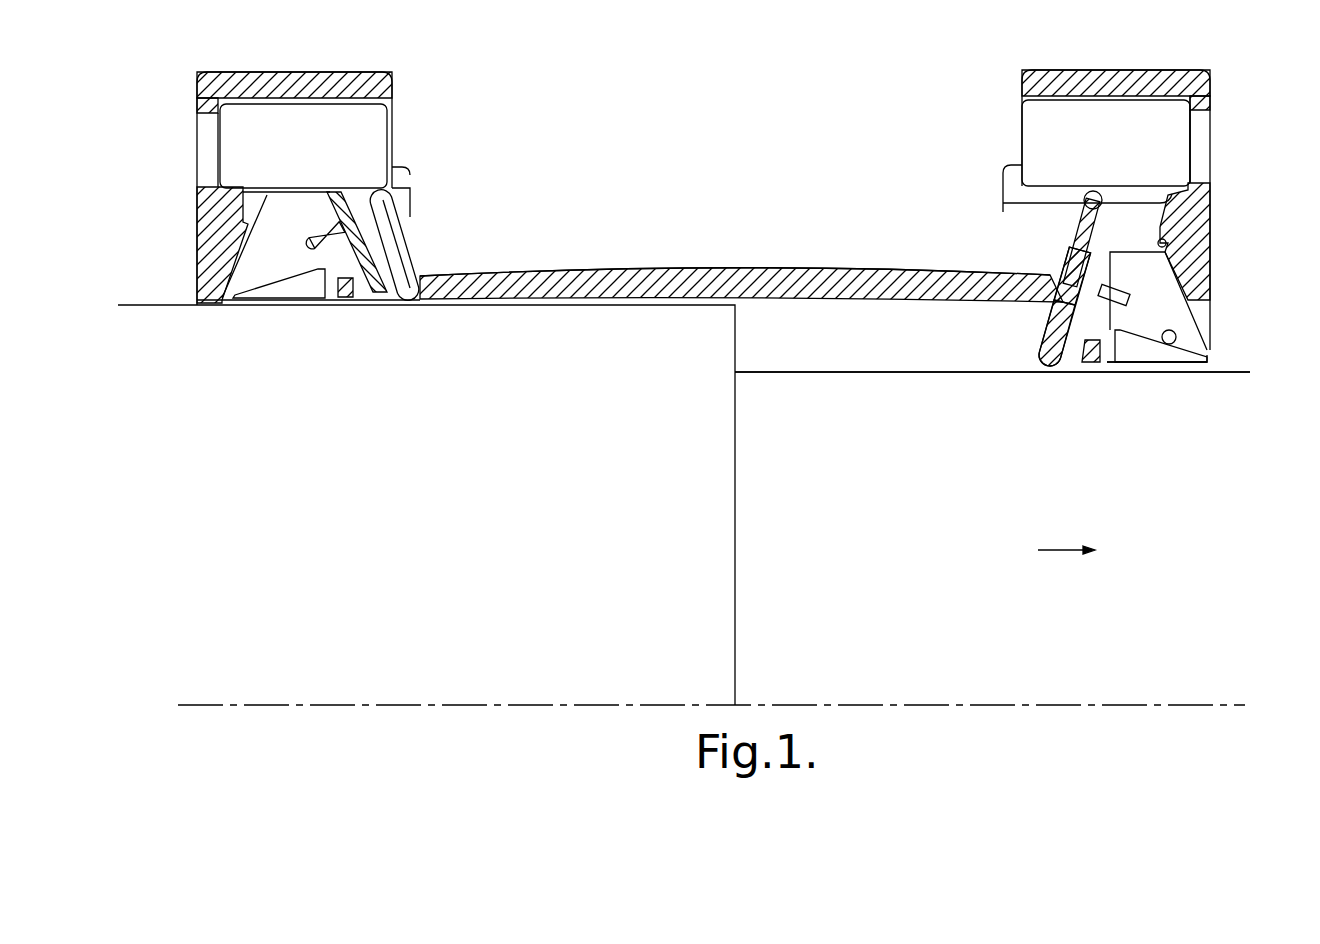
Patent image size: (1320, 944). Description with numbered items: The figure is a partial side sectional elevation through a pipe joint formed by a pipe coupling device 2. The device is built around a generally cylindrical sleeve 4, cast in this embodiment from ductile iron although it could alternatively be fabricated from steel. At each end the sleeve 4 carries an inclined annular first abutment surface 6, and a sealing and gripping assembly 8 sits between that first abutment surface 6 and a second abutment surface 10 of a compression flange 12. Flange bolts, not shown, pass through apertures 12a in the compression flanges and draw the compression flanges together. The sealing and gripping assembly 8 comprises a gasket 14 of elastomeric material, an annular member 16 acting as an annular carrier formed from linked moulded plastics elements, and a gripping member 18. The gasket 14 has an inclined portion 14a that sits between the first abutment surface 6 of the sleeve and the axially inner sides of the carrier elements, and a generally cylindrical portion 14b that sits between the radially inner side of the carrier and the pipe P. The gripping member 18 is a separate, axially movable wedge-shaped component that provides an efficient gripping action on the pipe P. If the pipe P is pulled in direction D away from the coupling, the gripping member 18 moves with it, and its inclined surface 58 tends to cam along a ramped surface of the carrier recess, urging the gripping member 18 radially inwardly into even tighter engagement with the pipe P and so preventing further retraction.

The pipe coupling device 2 is at (663, 262).
The sleeve 4 is at (802, 268).
The first abutment surface 6 is at (430, 293).
The sealing and gripping assembly 8 is at (1053, 260).
The second abutment surface 10 is at (1207, 255).
The compression flange 12 is at (1213, 225).
The aperture 12a is at (1197, 163).
The gasket 14 is at (1040, 348).
The inclined portion 14a is at (1062, 320).
The generally cylindrical portion 14b is at (1065, 365).
The annular member 16 is at (1185, 338).
The gripping member 18 is at (1122, 355).
The inclined surface 58 is at (1175, 345).
The pipe P is at (798, 373).
The direction D is at (1066, 565).